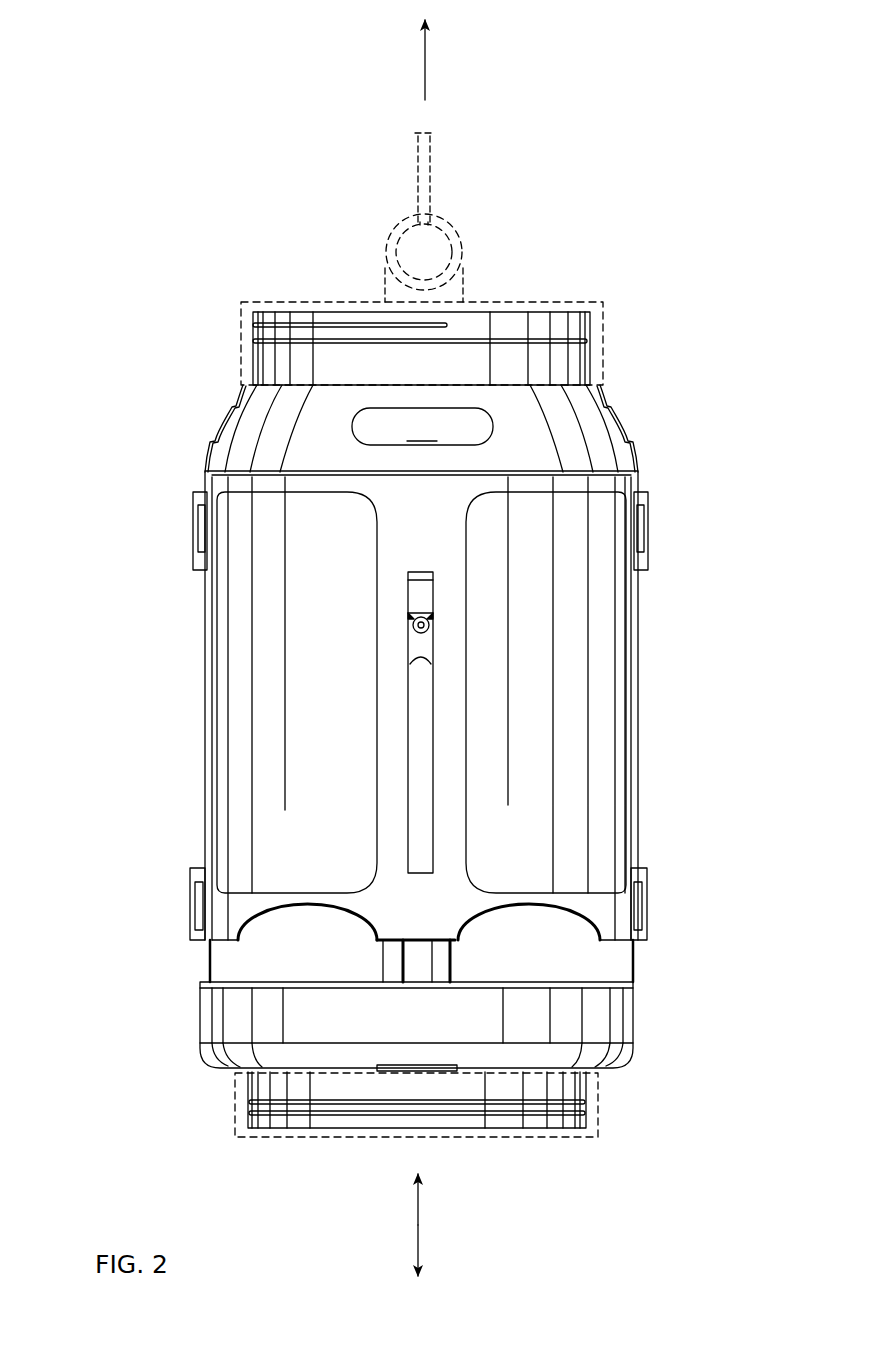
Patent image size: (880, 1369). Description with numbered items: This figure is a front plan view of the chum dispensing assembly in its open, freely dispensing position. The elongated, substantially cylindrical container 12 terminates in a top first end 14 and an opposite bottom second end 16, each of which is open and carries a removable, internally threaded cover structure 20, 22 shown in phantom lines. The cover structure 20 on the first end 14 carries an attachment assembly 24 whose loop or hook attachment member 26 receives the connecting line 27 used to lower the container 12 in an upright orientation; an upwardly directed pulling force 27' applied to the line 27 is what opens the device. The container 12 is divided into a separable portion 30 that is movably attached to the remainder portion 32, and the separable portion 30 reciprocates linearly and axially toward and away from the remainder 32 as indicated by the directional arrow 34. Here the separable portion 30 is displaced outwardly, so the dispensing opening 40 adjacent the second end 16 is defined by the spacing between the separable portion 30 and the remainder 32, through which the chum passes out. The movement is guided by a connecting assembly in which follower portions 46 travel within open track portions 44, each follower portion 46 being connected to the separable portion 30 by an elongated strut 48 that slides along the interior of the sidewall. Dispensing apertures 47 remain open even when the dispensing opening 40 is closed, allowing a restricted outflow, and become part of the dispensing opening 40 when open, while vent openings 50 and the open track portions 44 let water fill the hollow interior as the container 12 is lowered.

The container 12 is at (647, 716).
The first end 14 is at (622, 320).
The second end 16 is at (619, 1152).
The cover structure 20 is at (240, 322).
The cover structure 22 is at (233, 1092).
The attachment assembly 24 is at (470, 269).
The attachment member 26 is at (385, 252).
The connecting line 27 is at (347, 164).
The upwardly directed pulling force 27' is at (343, 54).
The separable portion 30 is at (657, 1053).
The remainder portion 32 is at (205, 756).
The directional arrow 34 is at (418, 1222).
The dispensing opening 40 is at (570, 965).
The track portion 44 is at (408, 760).
The follower portion 46 is at (411, 625).
The dispensing aperture 47 is at (290, 912).
The strut 48 is at (205, 952).
The vent opening 50 is at (232, 422).